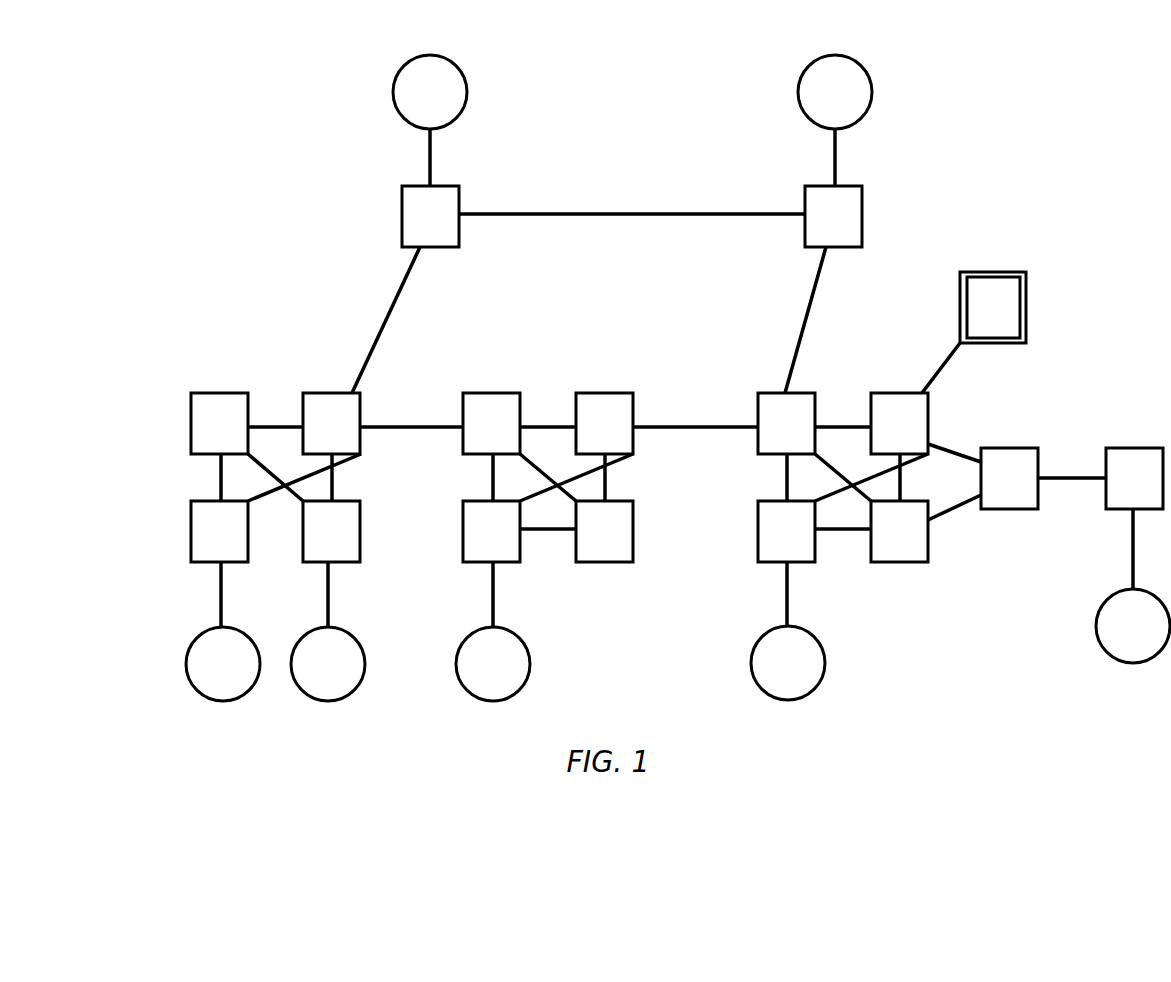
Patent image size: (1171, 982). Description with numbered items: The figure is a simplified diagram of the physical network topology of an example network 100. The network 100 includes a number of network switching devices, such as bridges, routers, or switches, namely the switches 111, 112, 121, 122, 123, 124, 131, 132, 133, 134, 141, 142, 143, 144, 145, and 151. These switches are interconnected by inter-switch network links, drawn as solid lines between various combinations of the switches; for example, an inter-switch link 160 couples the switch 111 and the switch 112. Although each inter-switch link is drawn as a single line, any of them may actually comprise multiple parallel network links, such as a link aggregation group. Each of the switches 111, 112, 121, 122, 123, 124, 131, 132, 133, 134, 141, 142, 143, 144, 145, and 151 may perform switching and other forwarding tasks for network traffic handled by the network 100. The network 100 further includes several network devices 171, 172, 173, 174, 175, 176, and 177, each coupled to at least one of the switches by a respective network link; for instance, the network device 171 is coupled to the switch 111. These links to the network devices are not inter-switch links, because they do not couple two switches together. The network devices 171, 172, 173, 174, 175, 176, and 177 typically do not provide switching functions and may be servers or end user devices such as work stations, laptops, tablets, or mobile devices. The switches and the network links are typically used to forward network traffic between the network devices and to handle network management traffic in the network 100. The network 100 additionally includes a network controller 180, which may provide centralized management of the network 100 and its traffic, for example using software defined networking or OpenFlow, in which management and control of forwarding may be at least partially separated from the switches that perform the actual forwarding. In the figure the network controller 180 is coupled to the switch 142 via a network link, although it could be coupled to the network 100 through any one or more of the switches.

The network 100 is at (242, 112).
The switch 111 is at (405, 289).
The switch 112 is at (823, 289).
The switch 121 is at (247, 447).
The switch 122 is at (355, 447).
The switch 123 is at (219, 564).
The switch 124 is at (331, 564).
The switch 131 is at (519, 447).
The switch 132 is at (639, 447).
The switch 133 is at (519, 564).
The switch 134 is at (604, 531).
The switch 141 is at (814, 447).
The switch 142 is at (898, 422).
The switch 143 is at (814, 563).
The switch 144 is at (926, 528).
The switch 145 is at (1043, 478).
The switch 151 is at (1134, 518).
The inter-switch link 160 is at (631, 213).
The network device 171 is at (430, 120).
The network device 172 is at (835, 120).
The network device 173 is at (223, 664).
The network device 174 is at (328, 664).
The network device 175 is at (493, 664).
The network device 176 is at (788, 663).
The network device 177 is at (1133, 626).
The network controller 180 is at (993, 307).